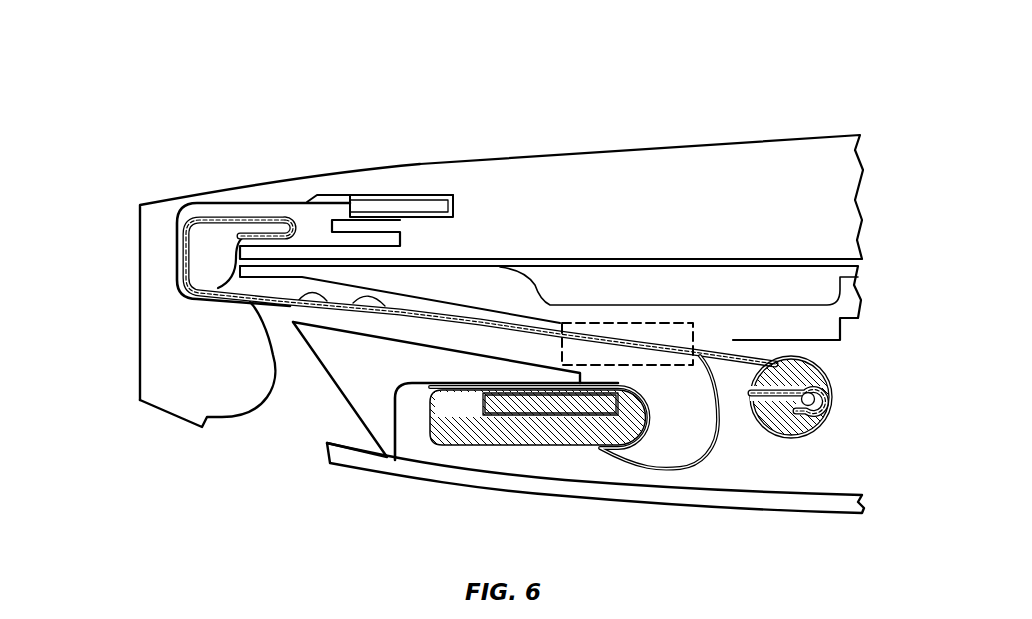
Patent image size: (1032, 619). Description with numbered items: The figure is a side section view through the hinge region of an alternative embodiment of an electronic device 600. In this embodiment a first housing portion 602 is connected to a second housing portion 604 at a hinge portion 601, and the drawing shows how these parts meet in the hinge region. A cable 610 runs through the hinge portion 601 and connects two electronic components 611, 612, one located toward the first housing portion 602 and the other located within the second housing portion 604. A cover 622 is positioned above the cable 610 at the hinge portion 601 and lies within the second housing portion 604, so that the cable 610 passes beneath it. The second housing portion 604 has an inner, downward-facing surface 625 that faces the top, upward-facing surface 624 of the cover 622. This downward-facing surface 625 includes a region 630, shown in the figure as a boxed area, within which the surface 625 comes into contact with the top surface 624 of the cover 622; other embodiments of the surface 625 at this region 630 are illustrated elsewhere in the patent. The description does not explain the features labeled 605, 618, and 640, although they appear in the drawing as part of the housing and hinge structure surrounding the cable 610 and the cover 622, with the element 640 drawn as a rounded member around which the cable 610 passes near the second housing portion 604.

The electronic device 600 is at (547, 113).
The hinge portion 601 is at (201, 437).
The first housing portion 602 is at (665, 137).
The second housing portion 604 is at (396, 486).
The cavity 605 is at (515, 300).
The cable 610 is at (585, 454).
The electronic component 611 is at (425, 203).
The electronic component 612 is at (572, 403).
The step 618 is at (222, 405).
The cover 622 is at (718, 350).
The top surface of the cover 624 is at (293, 307).
The downward-facing surface 625 is at (385, 296).
The region 630 is at (645, 325).
The roller pin assembly 640 is at (790, 425).